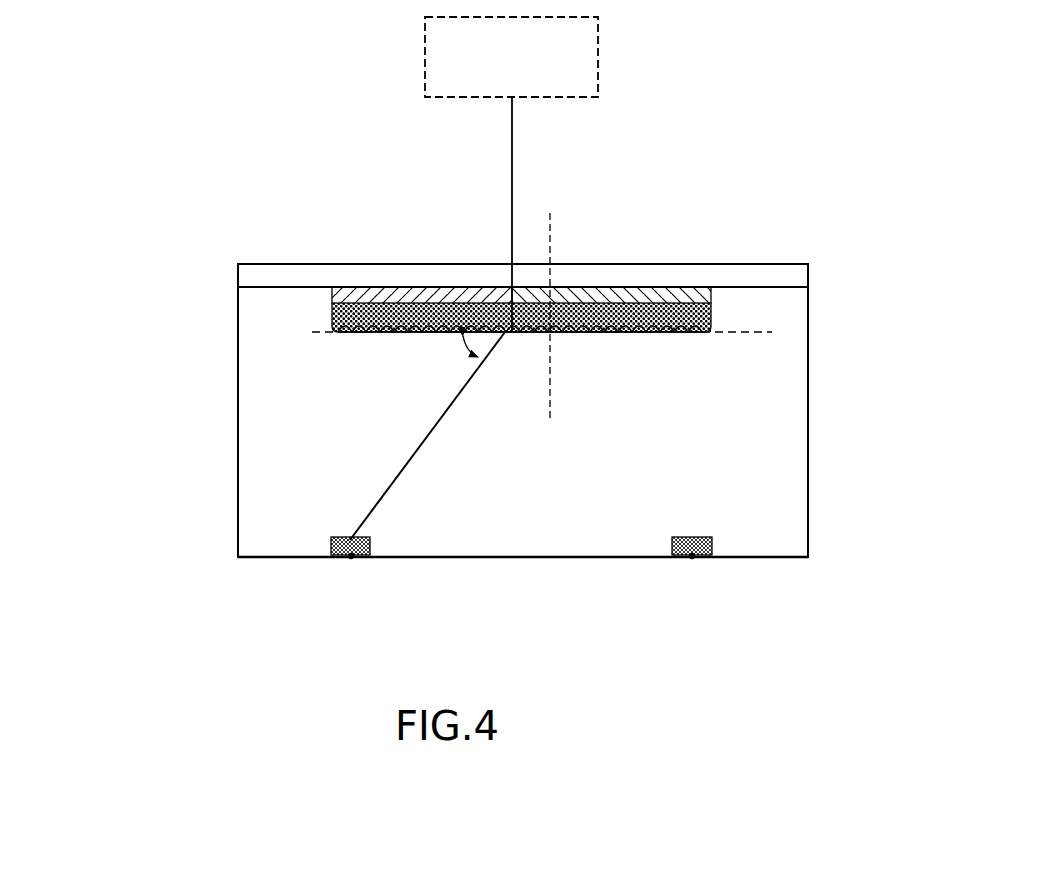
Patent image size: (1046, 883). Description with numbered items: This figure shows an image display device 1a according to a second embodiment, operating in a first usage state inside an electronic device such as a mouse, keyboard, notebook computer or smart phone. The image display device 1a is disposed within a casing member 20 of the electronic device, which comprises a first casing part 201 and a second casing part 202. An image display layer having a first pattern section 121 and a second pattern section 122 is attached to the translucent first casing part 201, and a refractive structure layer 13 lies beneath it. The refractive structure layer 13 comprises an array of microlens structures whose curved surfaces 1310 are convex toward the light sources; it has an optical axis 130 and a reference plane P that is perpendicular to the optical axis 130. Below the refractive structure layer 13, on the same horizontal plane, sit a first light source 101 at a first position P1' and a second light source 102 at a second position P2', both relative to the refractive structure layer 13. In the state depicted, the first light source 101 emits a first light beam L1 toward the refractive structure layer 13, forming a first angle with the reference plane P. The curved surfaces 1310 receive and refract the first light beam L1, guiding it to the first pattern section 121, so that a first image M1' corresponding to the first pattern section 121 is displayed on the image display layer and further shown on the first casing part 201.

The image display device 1a is at (283, 475).
The casing member 20 is at (130, 263).
The first casing part 201 is at (238, 275).
The second casing part 202 is at (238, 390).
The first image M1' is at (563, 174).
The refractive structure layer 13 is at (332, 322).
The first pattern section 121 is at (408, 287).
The second pattern section 122 is at (637, 287).
The optical axis 130 is at (553, 232).
The curved surface 1310 is at (606, 336).
The reference plane P is at (757, 333).
The first light beam L1 is at (430, 438).
The first light source 101 is at (331, 542).
The first position P1' is at (354, 601).
The second light source 102 is at (712, 545).
The second position P2' is at (696, 601).